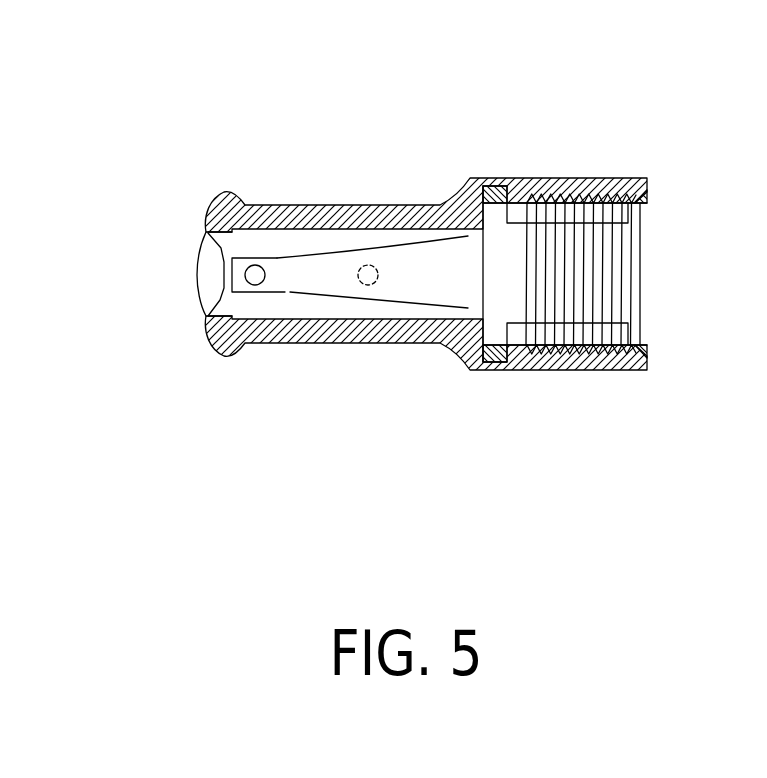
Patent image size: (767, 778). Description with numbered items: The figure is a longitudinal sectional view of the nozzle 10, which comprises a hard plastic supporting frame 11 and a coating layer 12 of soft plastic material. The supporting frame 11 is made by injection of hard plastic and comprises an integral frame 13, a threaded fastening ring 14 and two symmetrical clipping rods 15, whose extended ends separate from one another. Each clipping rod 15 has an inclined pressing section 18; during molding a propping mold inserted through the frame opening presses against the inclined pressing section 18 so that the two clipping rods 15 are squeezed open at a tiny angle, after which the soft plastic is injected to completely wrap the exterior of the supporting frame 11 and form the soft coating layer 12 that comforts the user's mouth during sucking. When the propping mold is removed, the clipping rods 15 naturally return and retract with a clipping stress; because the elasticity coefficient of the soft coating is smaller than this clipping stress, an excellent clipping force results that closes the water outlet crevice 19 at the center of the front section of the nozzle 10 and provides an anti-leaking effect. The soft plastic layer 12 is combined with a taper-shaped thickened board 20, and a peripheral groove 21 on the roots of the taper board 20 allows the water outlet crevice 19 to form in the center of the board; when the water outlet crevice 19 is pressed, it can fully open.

The nozzle 10 is at (425, 249).
The supporting frame 11 is at (647, 290).
The coating layer 12 is at (350, 205).
The integral frame 13 is at (492, 372).
The threaded fastening ring 14 is at (637, 372).
The clipping rods 15 is at (328, 297).
The inclined pressing section 18 is at (263, 267).
The water outlet crevice 19 is at (198, 266).
The thickened board 20 is at (206, 288).
The peripheral groove 21 is at (213, 353).